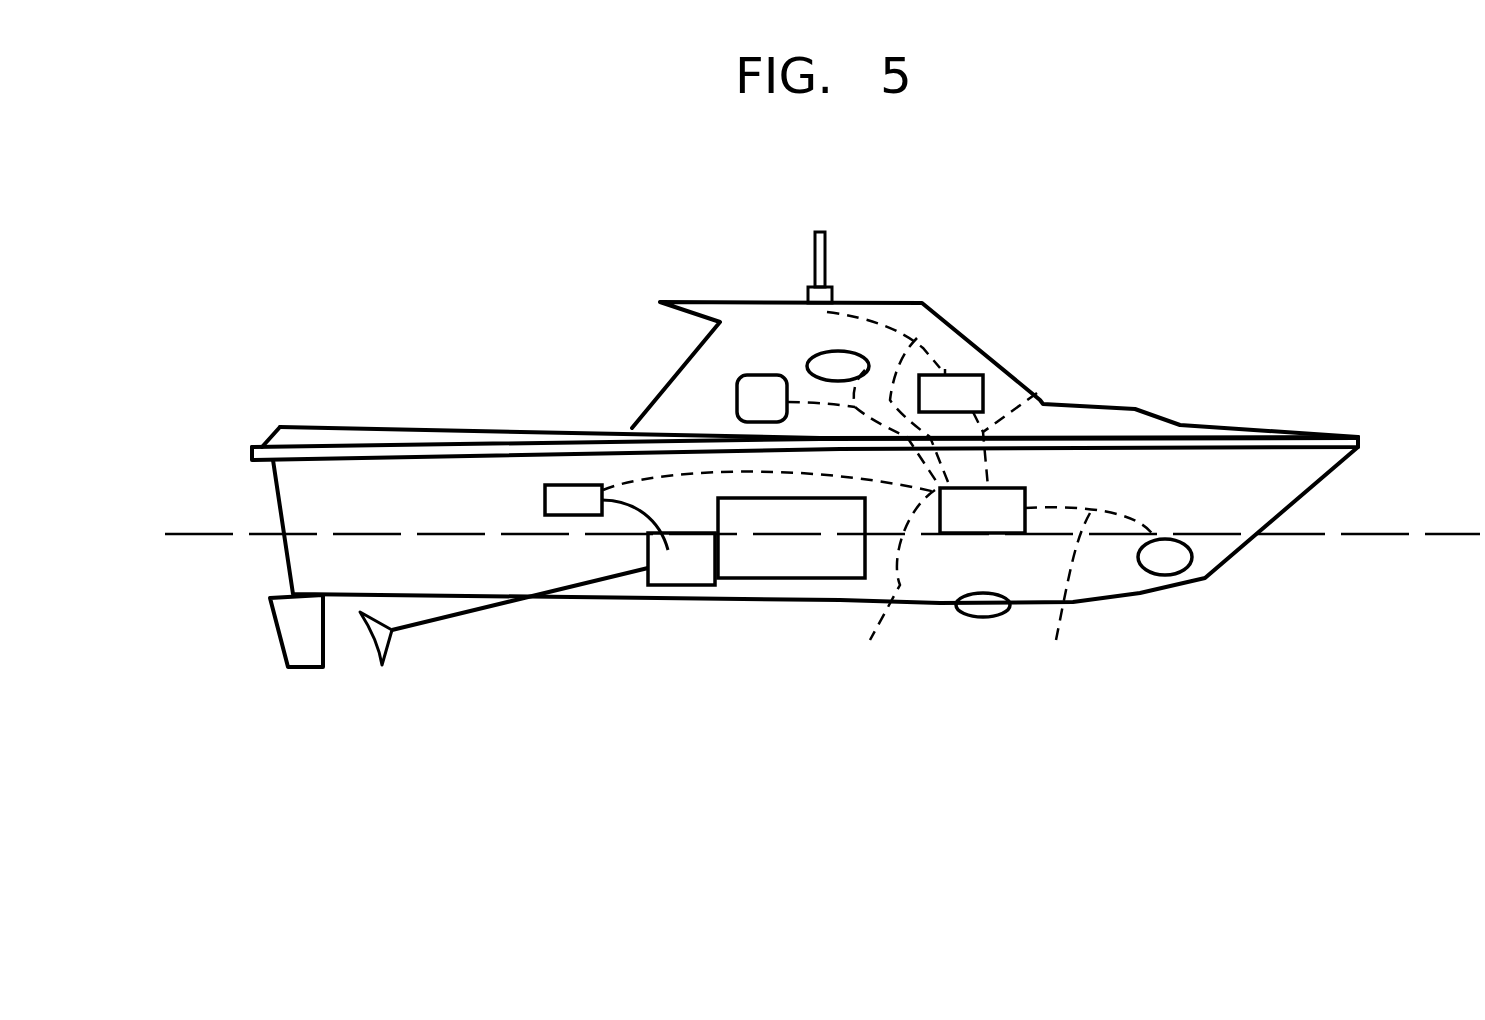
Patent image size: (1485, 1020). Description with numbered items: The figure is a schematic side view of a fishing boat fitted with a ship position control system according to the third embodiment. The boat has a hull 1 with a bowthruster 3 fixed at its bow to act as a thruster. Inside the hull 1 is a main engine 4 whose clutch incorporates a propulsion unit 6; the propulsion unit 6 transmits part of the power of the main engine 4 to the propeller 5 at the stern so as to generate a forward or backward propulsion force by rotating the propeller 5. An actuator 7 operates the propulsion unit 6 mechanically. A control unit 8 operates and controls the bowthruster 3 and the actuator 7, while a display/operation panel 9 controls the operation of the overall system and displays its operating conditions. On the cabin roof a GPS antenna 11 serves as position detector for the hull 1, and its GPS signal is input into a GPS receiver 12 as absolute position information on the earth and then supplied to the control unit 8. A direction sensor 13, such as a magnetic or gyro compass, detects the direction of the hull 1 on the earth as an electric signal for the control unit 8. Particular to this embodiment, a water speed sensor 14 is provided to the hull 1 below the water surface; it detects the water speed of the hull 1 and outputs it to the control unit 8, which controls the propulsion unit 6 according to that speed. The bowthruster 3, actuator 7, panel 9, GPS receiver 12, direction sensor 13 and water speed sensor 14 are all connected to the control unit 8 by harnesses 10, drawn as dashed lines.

The hull 1 is at (375, 428).
The bowthruster 3 is at (1157, 575).
The main engine 4 is at (797, 575).
The propeller 5 is at (375, 645).
The propulsion unit 6 is at (687, 584).
The actuator 7 is at (574, 485).
The control unit 8 is at (955, 535).
The display/operation panel 9 is at (737, 393).
The harnesses 10 is at (935, 358).
The GPS antenna 11 is at (826, 252).
The GPS receiver 12 is at (984, 378).
The direction sensor 13 is at (816, 353).
The water speed sensor 14 is at (983, 617).